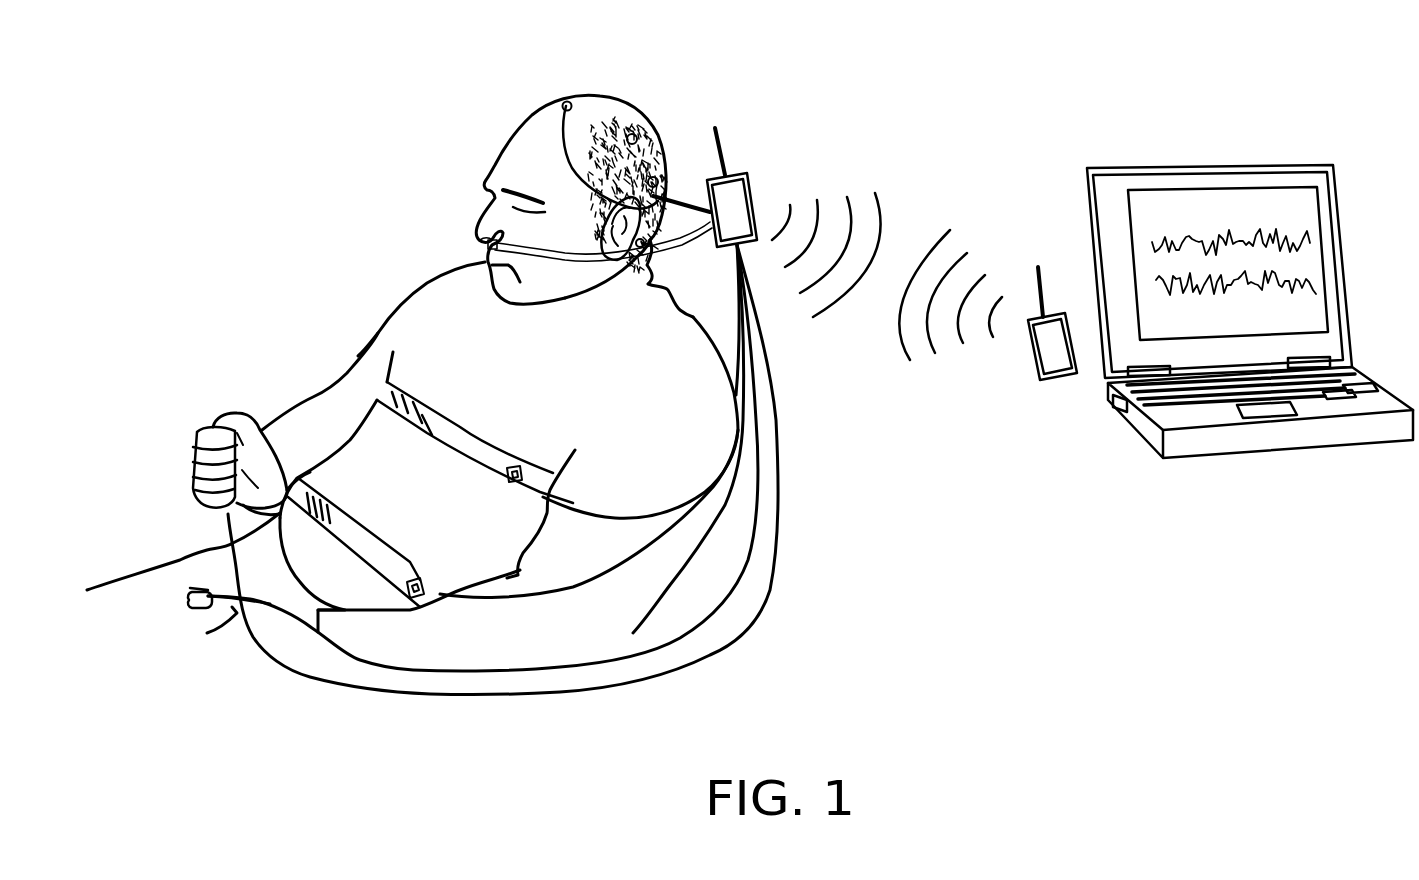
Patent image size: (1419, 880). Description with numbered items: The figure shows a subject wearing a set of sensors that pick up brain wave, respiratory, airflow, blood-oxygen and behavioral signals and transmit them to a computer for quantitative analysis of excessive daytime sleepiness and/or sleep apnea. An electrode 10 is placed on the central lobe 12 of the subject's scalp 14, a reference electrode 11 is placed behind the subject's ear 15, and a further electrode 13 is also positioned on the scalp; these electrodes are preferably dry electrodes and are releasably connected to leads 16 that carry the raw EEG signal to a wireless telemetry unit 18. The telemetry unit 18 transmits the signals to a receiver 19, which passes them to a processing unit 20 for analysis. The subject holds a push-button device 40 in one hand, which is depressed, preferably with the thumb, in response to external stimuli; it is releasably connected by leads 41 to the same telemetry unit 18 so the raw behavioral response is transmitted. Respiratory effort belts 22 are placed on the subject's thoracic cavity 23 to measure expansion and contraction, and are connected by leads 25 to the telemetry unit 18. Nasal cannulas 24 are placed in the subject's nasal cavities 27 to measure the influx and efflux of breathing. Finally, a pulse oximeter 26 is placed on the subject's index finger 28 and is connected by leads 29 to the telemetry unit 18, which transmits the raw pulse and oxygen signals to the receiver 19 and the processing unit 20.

The electrode 10 is at (568, 100).
The reference electrode 11 is at (656, 247).
The central lobe 12 is at (563, 103).
The electrode 13 is at (654, 177).
The scalp 14 is at (528, 138).
The ear 15 is at (652, 280).
The leads 16 is at (688, 203).
The wireless telemetry unit 18 is at (747, 176).
The receiver 19 is at (1033, 378).
The processing unit 20 is at (1130, 436).
The respiratory effort belts 22 is at (485, 463).
The thoracic cavity 23 is at (413, 473).
The nasal cannulas 24 is at (487, 248).
The leads 25 is at (744, 367).
The pulse oximeter 26 is at (197, 610).
The nasal cavities 27 is at (488, 240).
The index finger 28 is at (190, 597).
The leads 29 is at (777, 572).
The push-button device 40 is at (213, 425).
The leads 41 is at (757, 480).